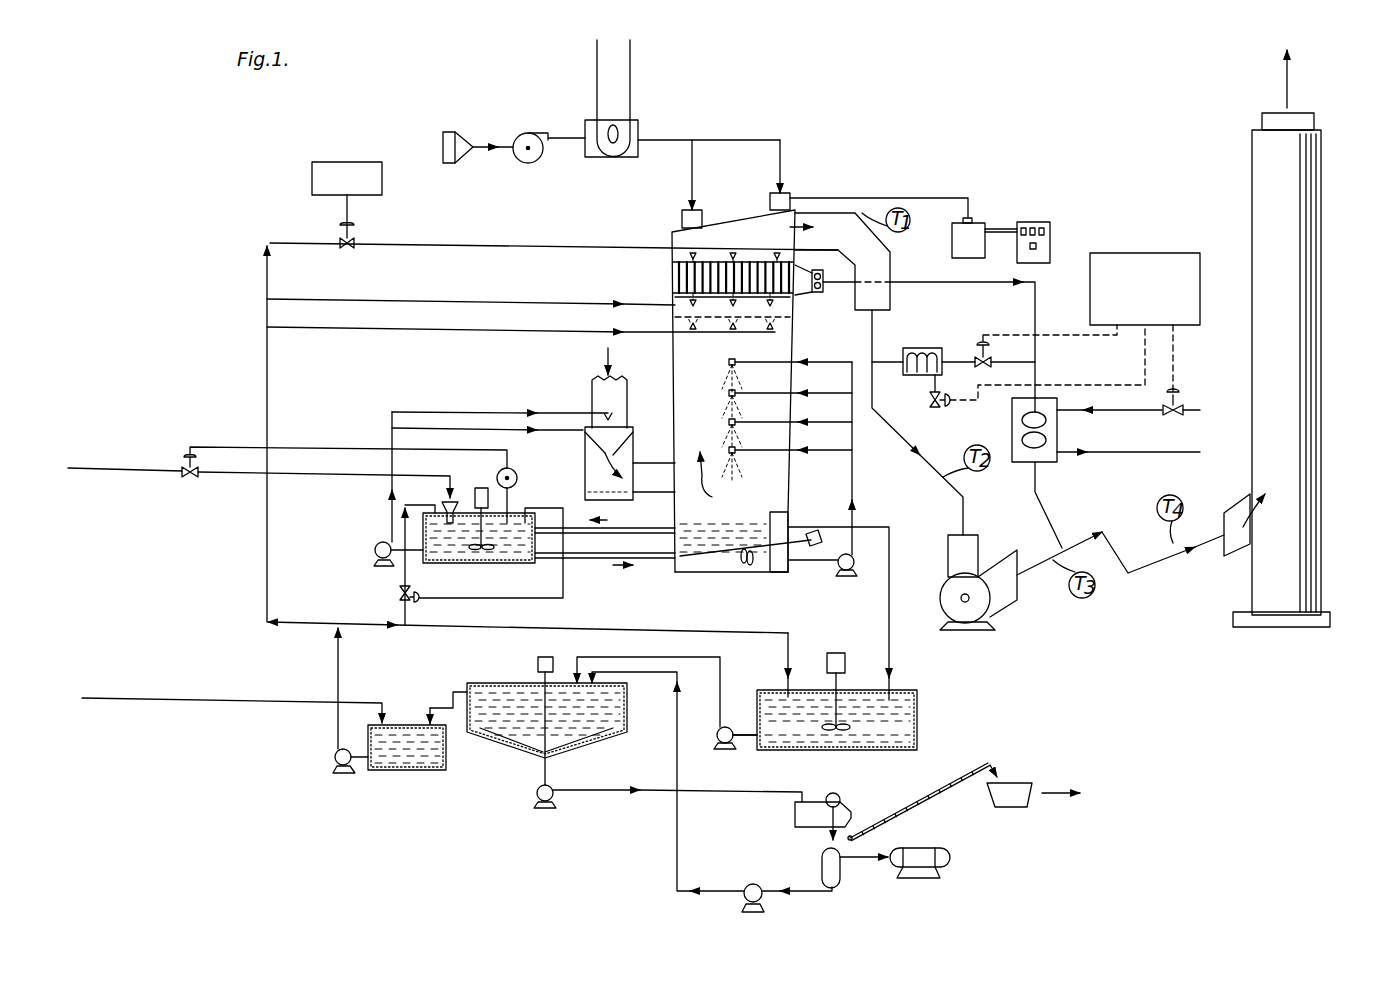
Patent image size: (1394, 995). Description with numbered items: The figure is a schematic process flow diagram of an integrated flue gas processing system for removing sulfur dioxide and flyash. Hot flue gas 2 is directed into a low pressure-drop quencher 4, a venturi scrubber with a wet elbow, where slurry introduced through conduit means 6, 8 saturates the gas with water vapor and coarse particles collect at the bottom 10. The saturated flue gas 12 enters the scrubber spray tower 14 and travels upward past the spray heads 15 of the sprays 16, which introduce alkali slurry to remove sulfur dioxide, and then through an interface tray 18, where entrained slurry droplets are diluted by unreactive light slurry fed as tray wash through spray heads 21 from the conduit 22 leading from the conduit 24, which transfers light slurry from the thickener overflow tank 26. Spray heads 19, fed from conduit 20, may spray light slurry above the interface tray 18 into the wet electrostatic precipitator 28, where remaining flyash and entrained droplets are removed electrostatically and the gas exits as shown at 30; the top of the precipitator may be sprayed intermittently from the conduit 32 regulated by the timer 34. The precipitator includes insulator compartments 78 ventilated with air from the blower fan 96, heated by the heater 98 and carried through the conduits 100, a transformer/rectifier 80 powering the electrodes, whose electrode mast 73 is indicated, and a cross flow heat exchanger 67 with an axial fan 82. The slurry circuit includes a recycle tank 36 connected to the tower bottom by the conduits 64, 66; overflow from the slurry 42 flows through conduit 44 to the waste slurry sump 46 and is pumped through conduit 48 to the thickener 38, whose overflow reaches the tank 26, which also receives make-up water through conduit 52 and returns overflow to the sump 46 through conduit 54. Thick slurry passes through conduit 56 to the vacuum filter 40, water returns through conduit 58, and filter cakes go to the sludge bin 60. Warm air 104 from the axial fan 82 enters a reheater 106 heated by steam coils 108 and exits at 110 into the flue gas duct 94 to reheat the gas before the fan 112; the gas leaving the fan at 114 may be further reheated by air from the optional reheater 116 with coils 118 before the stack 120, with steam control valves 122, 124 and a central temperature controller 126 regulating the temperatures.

The hot flue gas 2 is at (608, 350).
The low pressure-drop quencher 4 is at (635, 448).
The conduit means 6 is at (437, 411).
The conduit means 8 is at (570, 432).
The bottom of the quencher 10 is at (585, 492).
The saturated flue gas 12 is at (715, 482).
The scrubber spray tower 14 is at (798, 355).
The spray heads 15 is at (728, 423).
The sprays 16 is at (800, 393).
The interface tray 18 is at (782, 317).
The spray heads 19 is at (673, 297).
The conduit 20 is at (486, 299).
The spray heads 21 is at (720, 338).
The conduit 22 is at (460, 330).
The conduit 24 is at (267, 378).
The thickener overflow tank 26 is at (393, 778).
The wet electrostatic precipitator 28 is at (673, 270).
The flue gas exit 30 is at (790, 227).
The conduit 32 is at (492, 243).
The timer 34 is at (348, 162).
The recycle tank 36 is at (490, 566).
The thickener 38 is at (597, 742).
The vacuum filter system 40 is at (840, 795).
The slurry 42 is at (718, 573).
The conduit 44 is at (888, 640).
The waste slurry sump 46 is at (920, 712).
The conduit 48 is at (687, 657).
The conduit 52 is at (170, 692).
The conduit 54 is at (605, 628).
The conduit 56 is at (443, 700).
The conduit 58 is at (677, 840).
The sludge bin 60 is at (1025, 783).
The conduit 64 is at (643, 530).
The conduit 66 is at (592, 562).
The cross flow heat exchanger 67 is at (803, 265).
The electrode mast 73 is at (716, 252).
The insulator compartments 78 is at (790, 196).
The transformer/rectifier 80 is at (702, 216).
The axial fan 82 is at (823, 296).
The flue gas duct 94 is at (893, 242).
The blower fan 96 is at (532, 130).
The heater 98 is at (640, 122).
The conduits 100 is at (722, 141).
The warm air 104 is at (928, 284).
The reheater 106 is at (927, 348).
The coils 108 is at (910, 376).
The heated air 110 is at (884, 357).
The fan 112 is at (1000, 615).
The flue gas exiting fan 114 is at (1042, 563).
The optional reheater 116 is at (1060, 432).
The coils 118 is at (1122, 453).
The stack 120 is at (1321, 400).
The steam control valve 122 is at (984, 336).
The steam control valve 124 is at (1180, 395).
The central temperature controller 126 is at (1160, 253).